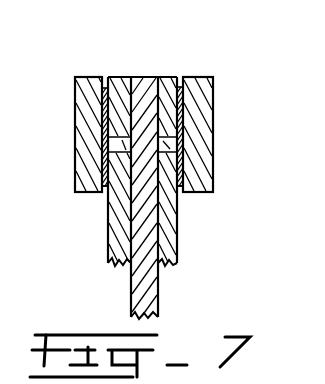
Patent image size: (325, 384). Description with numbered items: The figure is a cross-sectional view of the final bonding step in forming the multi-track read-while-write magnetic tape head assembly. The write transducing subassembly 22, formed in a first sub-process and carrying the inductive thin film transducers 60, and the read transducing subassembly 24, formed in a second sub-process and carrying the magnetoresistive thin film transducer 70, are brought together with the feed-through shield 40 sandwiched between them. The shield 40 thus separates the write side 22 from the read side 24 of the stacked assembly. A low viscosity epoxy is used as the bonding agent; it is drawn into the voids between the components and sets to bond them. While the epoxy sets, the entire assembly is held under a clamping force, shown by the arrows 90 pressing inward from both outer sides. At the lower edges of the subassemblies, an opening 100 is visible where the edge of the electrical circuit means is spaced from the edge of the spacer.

The write transducing subassembly 22 is at (137, 63).
The read transducing subassembly 24 is at (217, 63).
The feed-through shield 40 is at (155, 300).
The inductive thin film transducers 60 is at (107, 138).
The magnetoresistive thin film transducer 70 is at (181, 145).
The arrows depicting clamping force 90 is at (62, 98).
The opening 100 is at (108, 195).